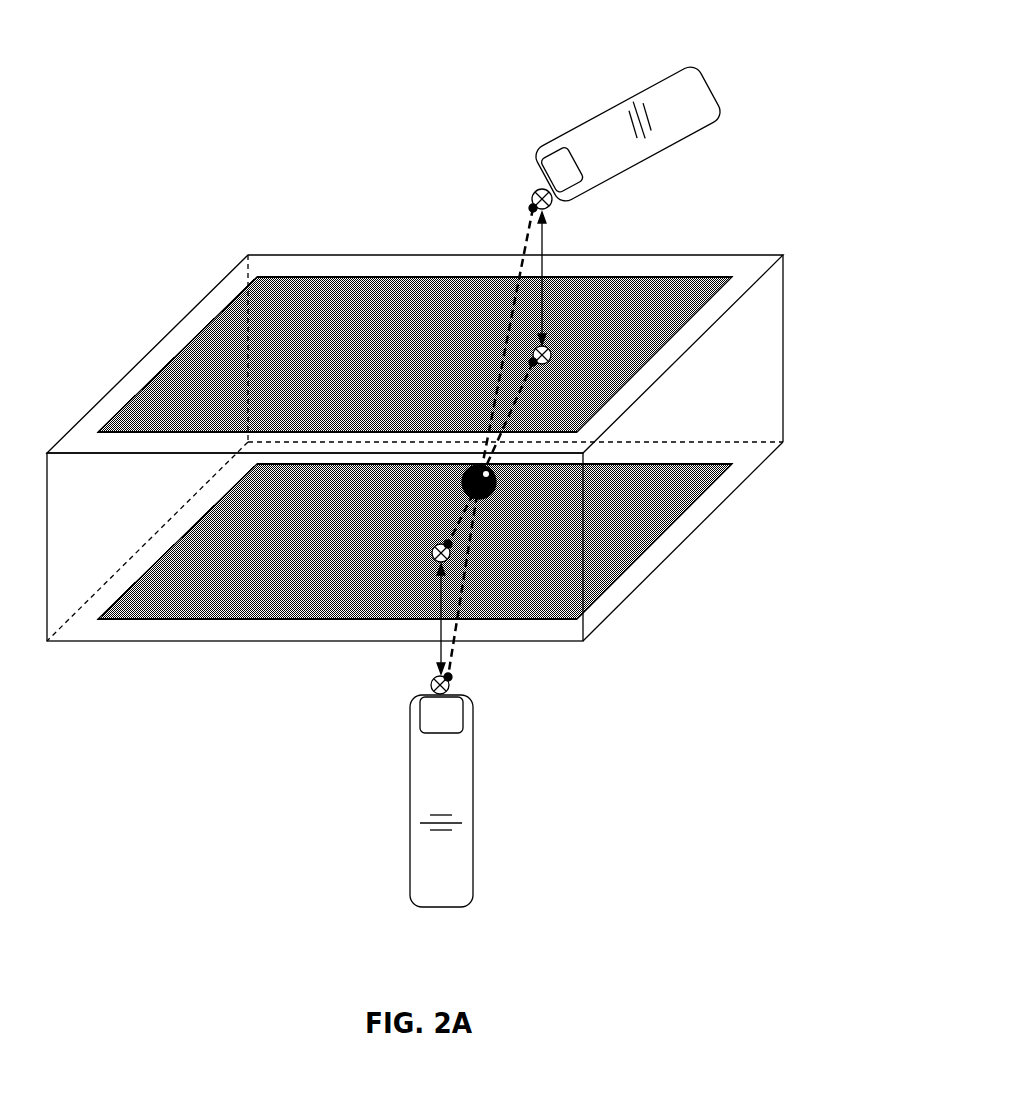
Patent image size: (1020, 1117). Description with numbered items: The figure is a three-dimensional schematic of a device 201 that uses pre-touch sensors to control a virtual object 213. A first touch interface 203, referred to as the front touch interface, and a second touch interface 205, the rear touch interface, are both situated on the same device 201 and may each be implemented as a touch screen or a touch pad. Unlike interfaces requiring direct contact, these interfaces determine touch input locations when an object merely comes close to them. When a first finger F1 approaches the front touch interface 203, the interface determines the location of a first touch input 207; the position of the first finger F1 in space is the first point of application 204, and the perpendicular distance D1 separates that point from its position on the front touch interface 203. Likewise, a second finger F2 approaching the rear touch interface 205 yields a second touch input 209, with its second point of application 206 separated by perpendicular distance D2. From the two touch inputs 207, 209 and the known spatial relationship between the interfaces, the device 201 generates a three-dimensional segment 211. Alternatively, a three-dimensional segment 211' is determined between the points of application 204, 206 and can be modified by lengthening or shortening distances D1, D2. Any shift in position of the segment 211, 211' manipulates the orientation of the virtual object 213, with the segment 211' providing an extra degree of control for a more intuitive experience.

The device 201 is at (783, 254).
The first touch interface 203 is at (338, 277).
The second touch interface 205 is at (240, 619).
The first point of application 204 is at (530, 201).
The second point of application 206 is at (453, 685).
The first touch input 207 is at (552, 355).
The second touch input 209 is at (431, 553).
The three-dimensional segment 211 is at (519, 519).
The three-dimensional segment 211' is at (478, 376).
The virtual object 213 is at (492, 500).
The perpendicular distance D1 is at (543, 312).
The perpendicular distance D2 is at (440, 607).
The first finger F1 is at (659, 89).
The second finger F2 is at (463, 852).